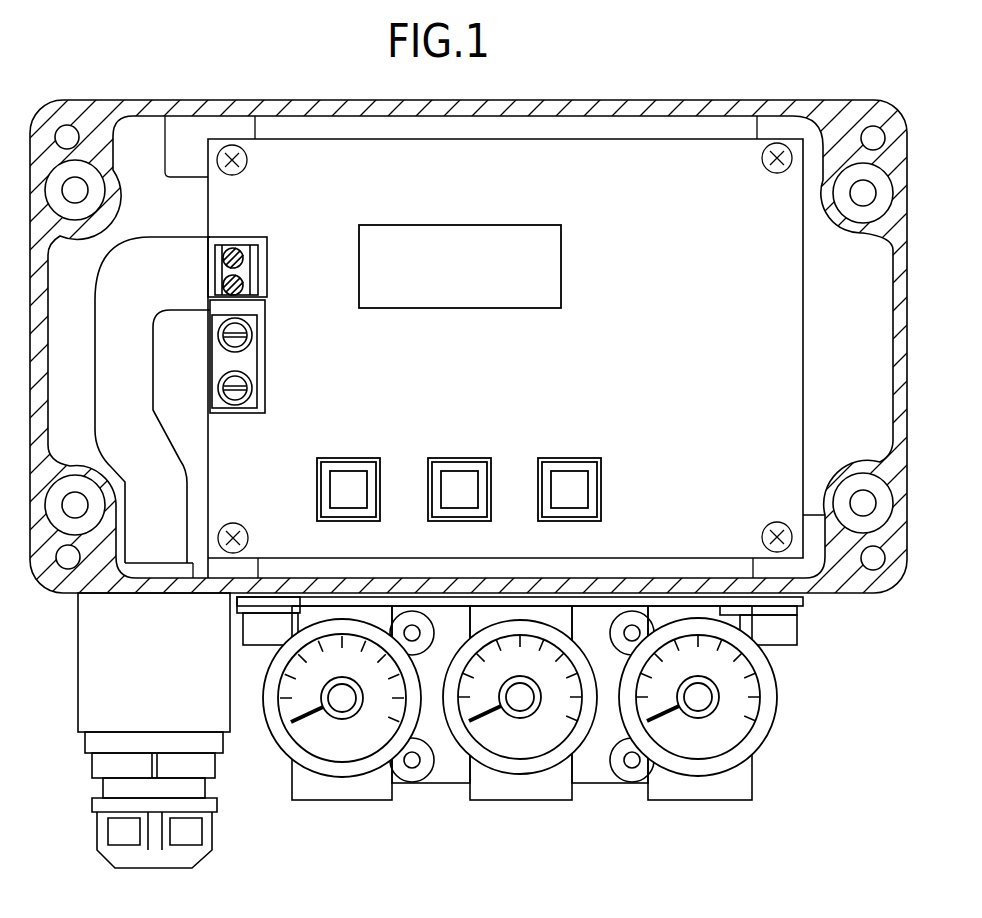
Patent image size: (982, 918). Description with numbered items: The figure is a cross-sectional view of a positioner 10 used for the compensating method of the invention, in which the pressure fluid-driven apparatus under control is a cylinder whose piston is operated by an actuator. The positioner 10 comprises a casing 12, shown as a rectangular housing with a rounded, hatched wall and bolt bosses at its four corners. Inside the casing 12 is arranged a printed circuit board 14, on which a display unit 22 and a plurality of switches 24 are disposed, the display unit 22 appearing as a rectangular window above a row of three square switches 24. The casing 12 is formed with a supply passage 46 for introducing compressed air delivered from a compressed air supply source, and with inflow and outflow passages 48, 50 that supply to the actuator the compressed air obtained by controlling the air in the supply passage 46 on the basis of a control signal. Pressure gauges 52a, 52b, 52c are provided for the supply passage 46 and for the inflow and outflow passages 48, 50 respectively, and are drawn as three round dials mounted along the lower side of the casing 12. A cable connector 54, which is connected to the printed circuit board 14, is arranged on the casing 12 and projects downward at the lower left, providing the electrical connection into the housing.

The positioner 10 is at (887, 76).
The casing 12 is at (613, 108).
The printed circuit board 14 is at (683, 157).
The display unit 22 is at (450, 240).
The switches 24 is at (568, 478).
The supply passage 46 is at (522, 802).
The inflow and outflow passage 48 is at (692, 803).
The inflow and outflow passage 50 is at (337, 803).
The pressure gauge 52a is at (543, 747).
The pressure gauge 52b is at (718, 745).
The pressure gauge 52c is at (357, 747).
The cable connector 54 is at (92, 632).